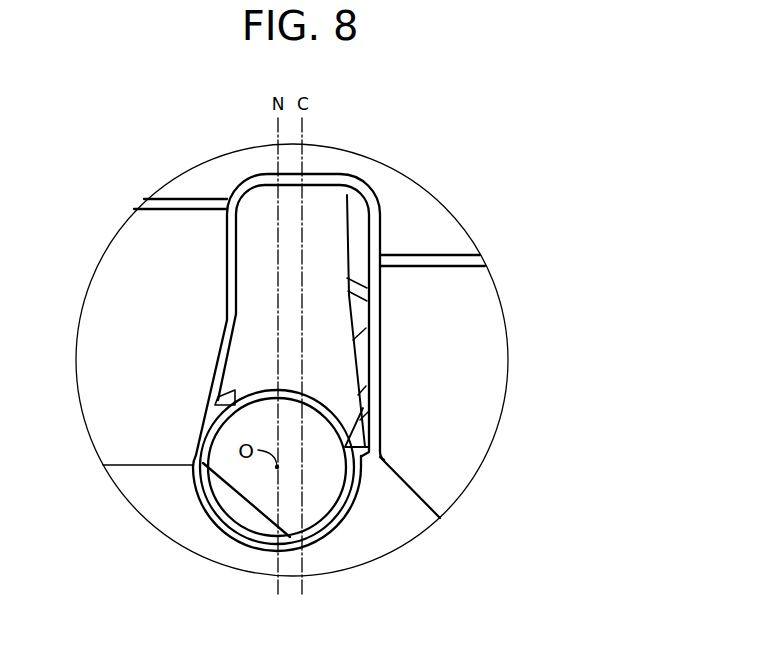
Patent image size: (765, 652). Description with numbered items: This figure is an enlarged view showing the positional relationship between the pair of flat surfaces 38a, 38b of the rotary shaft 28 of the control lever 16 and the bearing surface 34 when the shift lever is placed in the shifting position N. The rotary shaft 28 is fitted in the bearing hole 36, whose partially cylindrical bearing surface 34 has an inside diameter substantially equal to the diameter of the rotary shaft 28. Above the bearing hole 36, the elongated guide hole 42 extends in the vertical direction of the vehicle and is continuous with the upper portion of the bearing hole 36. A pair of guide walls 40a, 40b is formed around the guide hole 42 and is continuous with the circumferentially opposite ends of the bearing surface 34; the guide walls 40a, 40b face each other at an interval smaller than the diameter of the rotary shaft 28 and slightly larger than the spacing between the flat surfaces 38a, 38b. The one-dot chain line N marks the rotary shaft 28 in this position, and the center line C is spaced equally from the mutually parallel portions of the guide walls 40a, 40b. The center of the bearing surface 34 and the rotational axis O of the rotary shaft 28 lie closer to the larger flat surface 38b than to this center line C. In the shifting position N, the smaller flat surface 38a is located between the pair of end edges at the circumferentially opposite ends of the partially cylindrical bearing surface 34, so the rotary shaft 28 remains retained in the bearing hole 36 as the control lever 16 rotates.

The control lever 16 is at (352, 226).
The rotary shaft 28 is at (354, 488).
The bearing surface 34 is at (246, 530).
The bearing hole 36 is at (330, 539).
The flat surface 38a is at (313, 410).
The flat surface 38b is at (235, 490).
The guide wall 40a is at (371, 275).
The guide wall 40b is at (237, 272).
The guide hole 42 is at (380, 298).